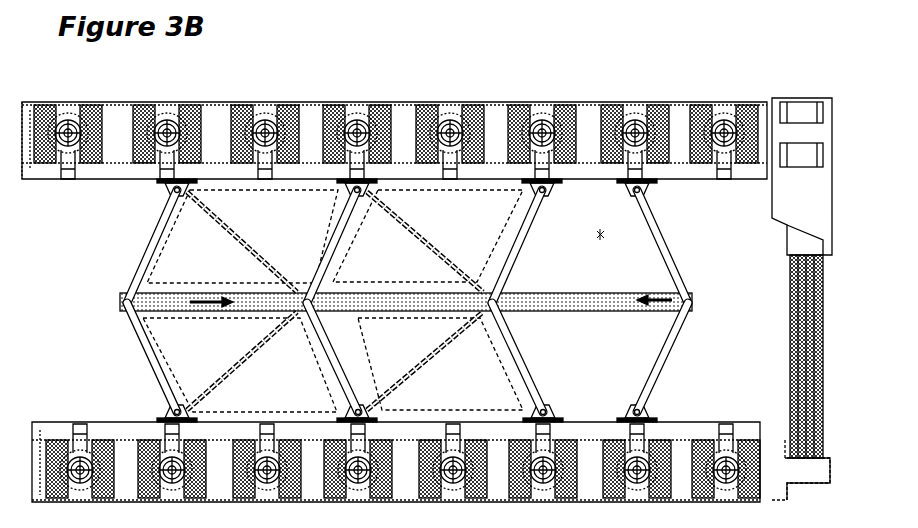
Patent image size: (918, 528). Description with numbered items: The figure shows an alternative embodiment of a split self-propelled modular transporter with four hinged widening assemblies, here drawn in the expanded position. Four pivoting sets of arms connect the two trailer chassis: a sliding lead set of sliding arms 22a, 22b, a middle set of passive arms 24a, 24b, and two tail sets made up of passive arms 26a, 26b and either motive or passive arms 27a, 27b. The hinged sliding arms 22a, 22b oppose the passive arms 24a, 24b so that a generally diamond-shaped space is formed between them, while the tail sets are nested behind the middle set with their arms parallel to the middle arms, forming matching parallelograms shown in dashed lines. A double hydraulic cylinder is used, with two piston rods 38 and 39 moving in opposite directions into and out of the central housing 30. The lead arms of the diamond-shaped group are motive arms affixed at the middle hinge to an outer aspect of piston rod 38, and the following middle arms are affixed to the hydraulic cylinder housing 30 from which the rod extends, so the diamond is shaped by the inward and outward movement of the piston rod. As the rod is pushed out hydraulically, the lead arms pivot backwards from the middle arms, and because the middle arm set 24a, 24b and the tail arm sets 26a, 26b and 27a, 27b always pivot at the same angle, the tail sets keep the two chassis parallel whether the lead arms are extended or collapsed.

The sliding arm 22a is at (680, 247).
The sliding arm 22b is at (667, 372).
The passive arm 24a is at (514, 255).
The passive arm 24b is at (510, 362).
The passive arm 26a is at (314, 255).
The passive arm 26b is at (344, 392).
The motive or passive arm 27a is at (128, 263).
The motive or passive arm 27b is at (137, 365).
The central housing 30 is at (607, 313).
The piston rod 38 is at (600, 241).
The piston rod 39 is at (234, 290).